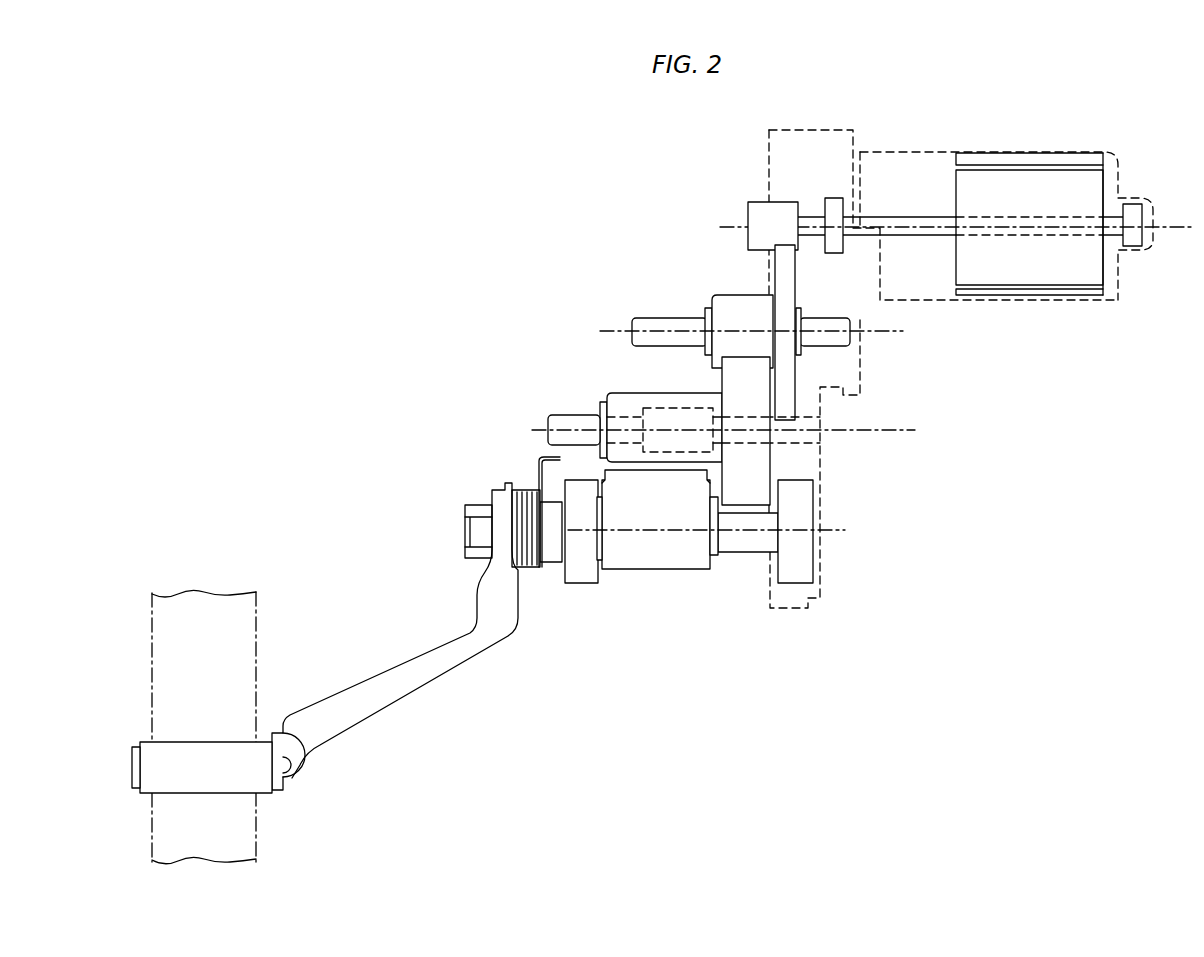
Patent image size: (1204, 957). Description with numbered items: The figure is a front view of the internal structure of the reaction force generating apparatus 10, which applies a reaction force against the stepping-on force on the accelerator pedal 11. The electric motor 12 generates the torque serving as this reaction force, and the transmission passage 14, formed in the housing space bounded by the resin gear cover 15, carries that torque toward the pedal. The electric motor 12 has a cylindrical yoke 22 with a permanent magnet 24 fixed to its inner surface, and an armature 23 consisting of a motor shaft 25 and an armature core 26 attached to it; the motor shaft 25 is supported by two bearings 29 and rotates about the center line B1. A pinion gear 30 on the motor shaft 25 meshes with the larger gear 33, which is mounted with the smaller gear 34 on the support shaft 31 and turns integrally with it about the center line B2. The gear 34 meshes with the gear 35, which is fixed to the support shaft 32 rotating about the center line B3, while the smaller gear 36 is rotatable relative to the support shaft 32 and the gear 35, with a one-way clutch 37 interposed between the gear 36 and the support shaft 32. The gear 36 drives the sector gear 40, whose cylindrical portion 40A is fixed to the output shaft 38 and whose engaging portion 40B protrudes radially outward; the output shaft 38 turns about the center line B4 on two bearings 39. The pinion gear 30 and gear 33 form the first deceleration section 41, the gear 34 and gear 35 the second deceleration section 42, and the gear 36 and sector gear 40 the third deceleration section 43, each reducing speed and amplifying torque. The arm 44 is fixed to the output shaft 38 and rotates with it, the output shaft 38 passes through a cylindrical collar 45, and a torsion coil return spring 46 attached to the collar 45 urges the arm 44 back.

The reaction force generating apparatus 10 is at (505, 200).
The accelerator pedal 11 is at (290, 617).
The electric motor 12 is at (973, 240).
The transmission passage 14 is at (666, 342).
The gear cover 15 is at (805, 458).
The yoke 22 is at (973, 240).
The armature 23 is at (973, 235).
The permanent magnet 24 is at (1022, 155).
The motor shaft 25 is at (935, 240).
The armature core 26 is at (1082, 270).
The bearings 29 is at (836, 198).
The pinion gear 30 is at (762, 213).
The support shaft 31 is at (640, 323).
The support shaft 32 is at (553, 425).
The gear 33 is at (800, 410).
The gear 34 is at (743, 300).
The gear 35 is at (765, 490).
The gear 36 is at (630, 400).
The one-way clutch 37 is at (662, 395).
The output shaft 38 is at (735, 548).
The bearings 39 is at (578, 563).
The sector gear 40 is at (591, 557).
The cylindrical portion 40A is at (640, 555).
The engaging portion 40B is at (620, 468).
The first deceleration section 41 is at (762, 302).
The second deceleration section 42 is at (691, 313).
The third deceleration section 43 is at (633, 406).
The arm 44 is at (347, 723).
The collar 45 is at (550, 555).
The return spring 46 is at (510, 473).
The center line B1 is at (1182, 240).
The center line B2 is at (900, 335).
The center line B3 is at (915, 440).
The center line B4 is at (845, 535).